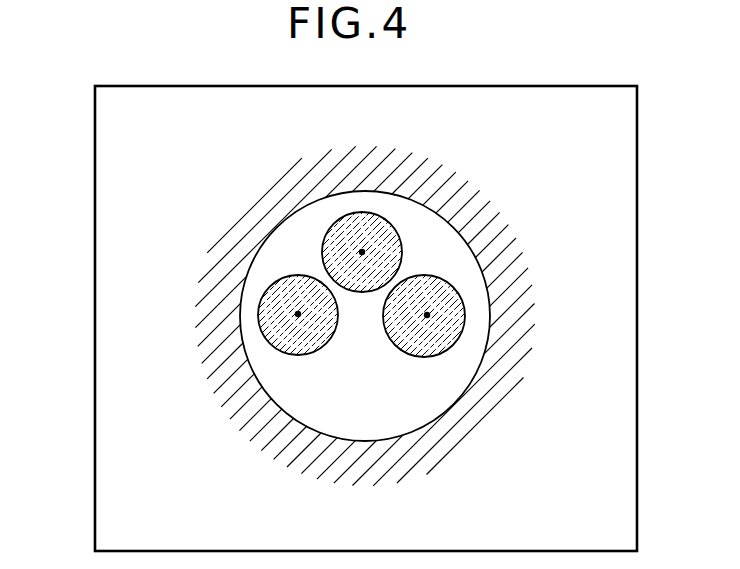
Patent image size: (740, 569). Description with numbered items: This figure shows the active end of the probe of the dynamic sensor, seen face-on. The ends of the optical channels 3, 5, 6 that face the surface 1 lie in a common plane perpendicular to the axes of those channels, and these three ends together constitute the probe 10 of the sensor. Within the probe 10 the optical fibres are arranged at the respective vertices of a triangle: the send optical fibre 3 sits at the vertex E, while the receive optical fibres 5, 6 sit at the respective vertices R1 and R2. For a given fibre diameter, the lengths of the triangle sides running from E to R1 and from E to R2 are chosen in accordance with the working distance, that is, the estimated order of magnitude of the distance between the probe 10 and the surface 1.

The surface 1 is at (113, 163).
The probe 10 is at (456, 228).
The receive optical fibre 5 is at (362, 232).
The receive optical fibre 6 is at (244, 336).
The send optical fibre 3 is at (481, 336).
The vertex R1 is at (362, 254).
The vertex R2 is at (298, 315).
The vertex E is at (427, 316).